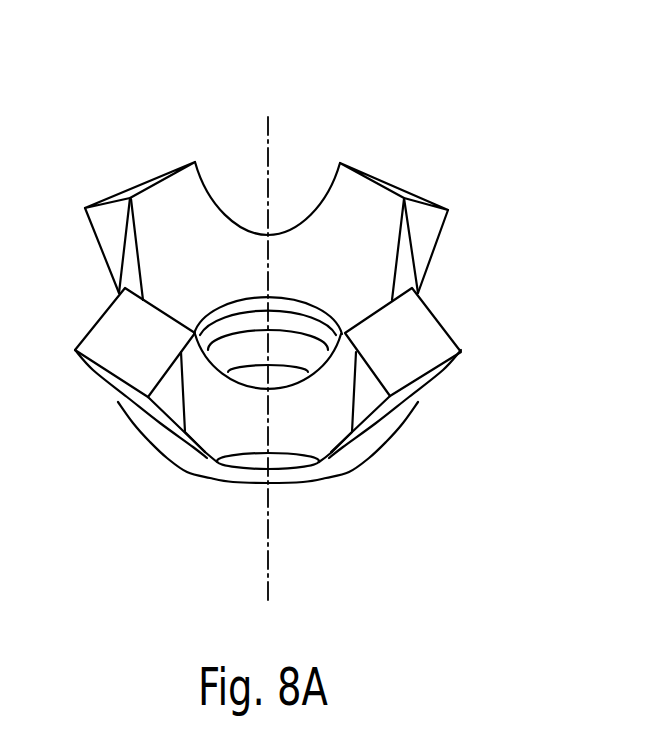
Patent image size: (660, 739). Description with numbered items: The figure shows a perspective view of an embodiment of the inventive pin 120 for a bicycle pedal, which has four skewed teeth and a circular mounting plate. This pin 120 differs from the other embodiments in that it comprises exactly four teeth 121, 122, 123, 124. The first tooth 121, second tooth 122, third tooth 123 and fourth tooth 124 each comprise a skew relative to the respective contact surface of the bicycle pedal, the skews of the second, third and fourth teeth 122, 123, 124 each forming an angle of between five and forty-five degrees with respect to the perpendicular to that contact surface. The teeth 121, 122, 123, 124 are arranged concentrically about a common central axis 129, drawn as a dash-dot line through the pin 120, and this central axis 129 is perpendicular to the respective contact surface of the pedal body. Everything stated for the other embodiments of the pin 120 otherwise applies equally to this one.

The pin 120 is at (339, 101).
The first tooth 121 is at (132, 188).
The second tooth 122 is at (405, 188).
The third tooth 123 is at (132, 342).
The fourth tooth 124 is at (402, 342).
The central axis 129 is at (268, 585).